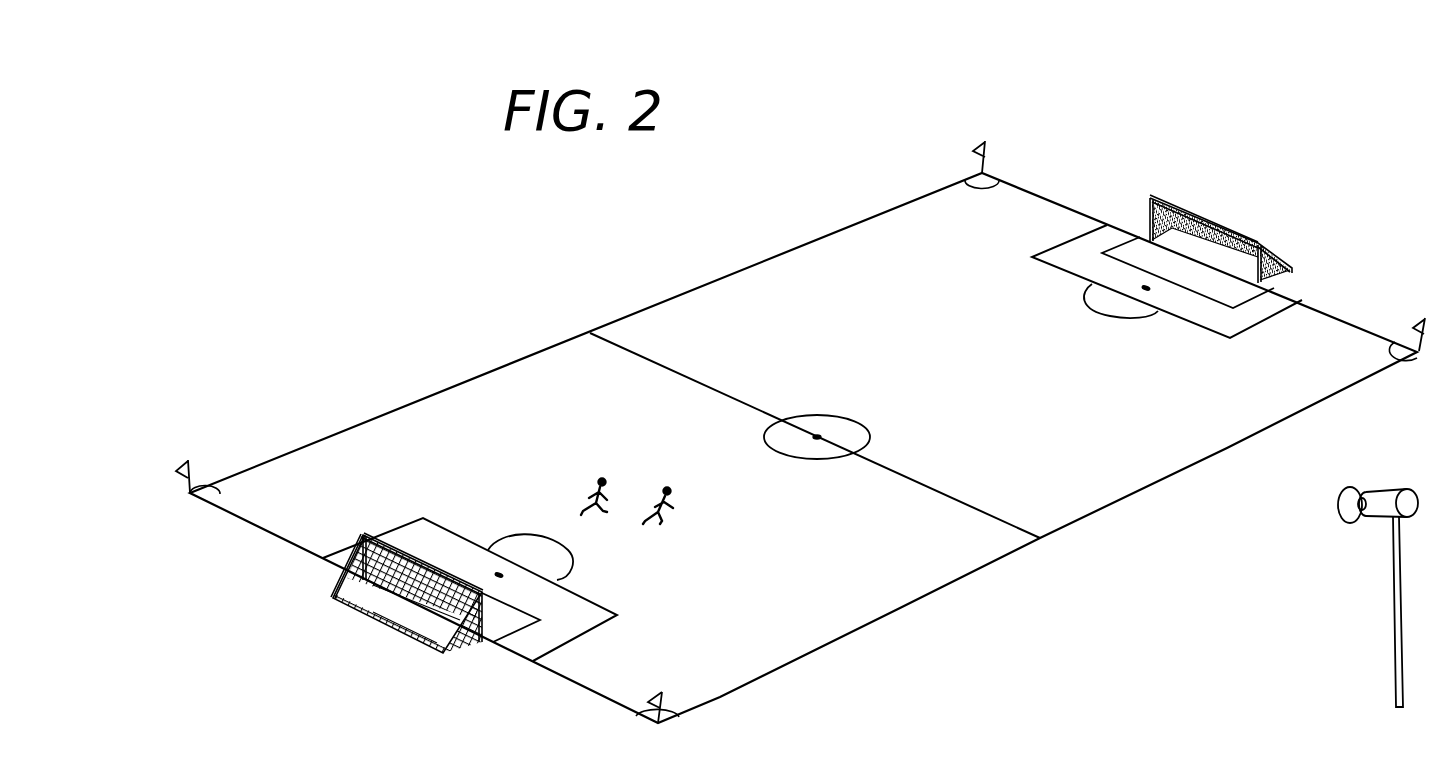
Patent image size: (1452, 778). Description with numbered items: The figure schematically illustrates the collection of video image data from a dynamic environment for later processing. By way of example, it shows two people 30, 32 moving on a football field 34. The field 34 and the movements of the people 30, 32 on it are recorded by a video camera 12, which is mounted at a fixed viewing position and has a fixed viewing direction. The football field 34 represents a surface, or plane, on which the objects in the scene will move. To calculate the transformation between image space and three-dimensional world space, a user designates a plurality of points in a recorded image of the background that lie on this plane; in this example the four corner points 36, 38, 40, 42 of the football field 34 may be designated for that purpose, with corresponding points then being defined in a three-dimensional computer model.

The video camera 12 is at (1388, 497).
The person 30 is at (588, 490).
The person 32 is at (673, 498).
The football field 34 is at (995, 582).
The corner point 36 is at (658, 724).
The corner point 38 is at (190, 494).
The corner point 40 is at (993, 168).
The corner point 42 is at (1423, 353).